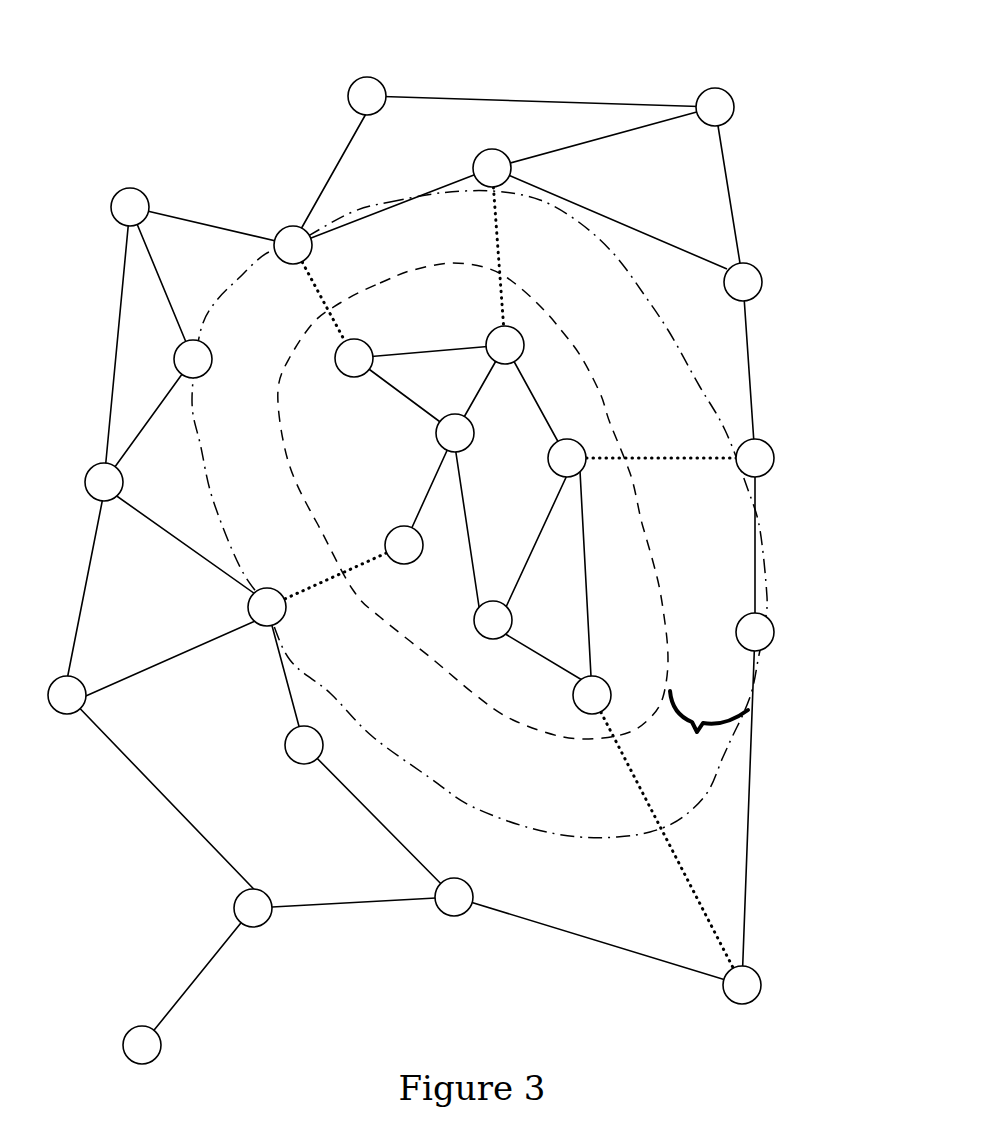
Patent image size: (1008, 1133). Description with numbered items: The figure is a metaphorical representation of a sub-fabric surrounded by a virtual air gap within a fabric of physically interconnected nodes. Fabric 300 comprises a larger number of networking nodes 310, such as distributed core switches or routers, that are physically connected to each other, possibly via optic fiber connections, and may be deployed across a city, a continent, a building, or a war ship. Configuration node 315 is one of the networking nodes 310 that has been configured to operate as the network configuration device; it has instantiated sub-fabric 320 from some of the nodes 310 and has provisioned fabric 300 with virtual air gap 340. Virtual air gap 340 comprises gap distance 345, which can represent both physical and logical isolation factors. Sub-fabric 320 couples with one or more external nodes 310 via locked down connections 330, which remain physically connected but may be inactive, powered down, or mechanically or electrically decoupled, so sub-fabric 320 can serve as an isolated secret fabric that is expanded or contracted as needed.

The fabric 300 is at (862, 87).
The networking nodes 310 is at (379, 82).
The configuration node 315 is at (113, 200).
The sub-fabric 320 is at (293, 475).
The locked down connections 330 is at (692, 895).
The virtual air gap 340 is at (745, 377).
The gap distance 345 is at (692, 744).